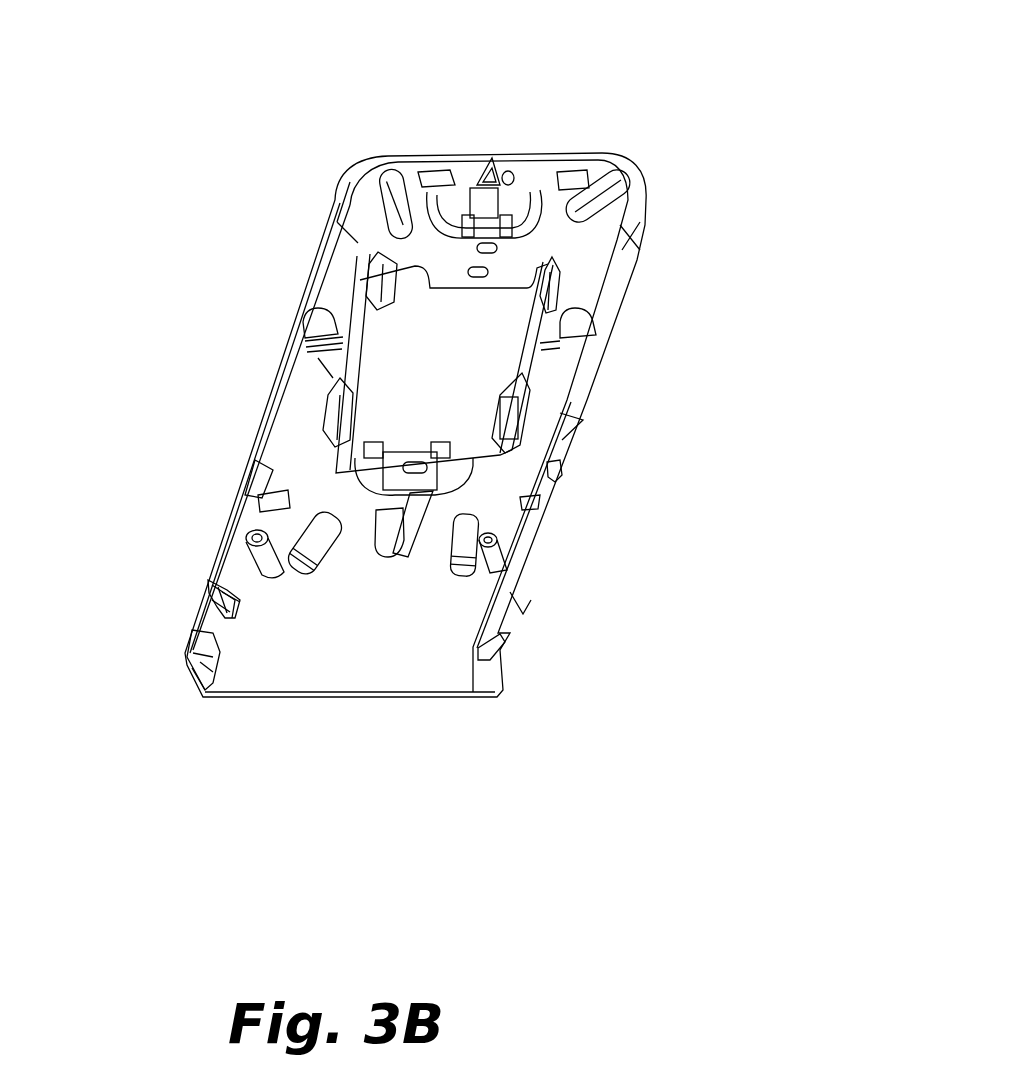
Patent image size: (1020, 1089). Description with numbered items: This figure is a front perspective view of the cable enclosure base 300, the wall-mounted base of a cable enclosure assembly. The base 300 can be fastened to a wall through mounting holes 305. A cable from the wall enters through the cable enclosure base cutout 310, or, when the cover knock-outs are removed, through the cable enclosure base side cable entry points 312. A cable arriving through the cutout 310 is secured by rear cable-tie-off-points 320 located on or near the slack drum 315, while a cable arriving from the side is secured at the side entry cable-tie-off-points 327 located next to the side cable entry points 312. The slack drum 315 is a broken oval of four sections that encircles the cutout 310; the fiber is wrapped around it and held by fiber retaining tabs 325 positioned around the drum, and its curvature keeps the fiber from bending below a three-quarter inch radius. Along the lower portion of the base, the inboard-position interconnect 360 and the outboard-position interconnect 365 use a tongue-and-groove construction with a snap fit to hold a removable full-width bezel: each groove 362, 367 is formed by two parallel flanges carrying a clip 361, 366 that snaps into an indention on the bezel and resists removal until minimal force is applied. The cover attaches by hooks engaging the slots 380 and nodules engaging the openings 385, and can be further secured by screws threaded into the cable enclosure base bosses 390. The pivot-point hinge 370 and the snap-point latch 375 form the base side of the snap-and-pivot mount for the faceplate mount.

The cable enclosure base 300 is at (318, 145).
The mounting holes 305 is at (482, 270).
The cable enclosure base cutout 310 is at (427, 402).
The cable enclosure base side cable entry points 312 is at (258, 467).
The slack drum 315 is at (393, 157).
The rear cable-tie-off-points 320 is at (360, 283).
The fiber retaining tabs 325 is at (507, 157).
The cable enclosure base side entry cable-tie-off-points 327 is at (263, 493).
The inboard-position interconnect 360 is at (300, 743).
The clip 361 is at (235, 606).
The groove 362 is at (225, 617).
The outboard-position interconnect 365 is at (355, 752).
The clip 366 is at (210, 697).
The groove 367 is at (187, 660).
The pivot-point hinge 370 is at (442, 470).
The snap-point latch 375 is at (535, 152).
The slots 380 is at (428, 158).
The openings 385 is at (205, 645).
The cable enclosure base bosses 390 is at (250, 552).